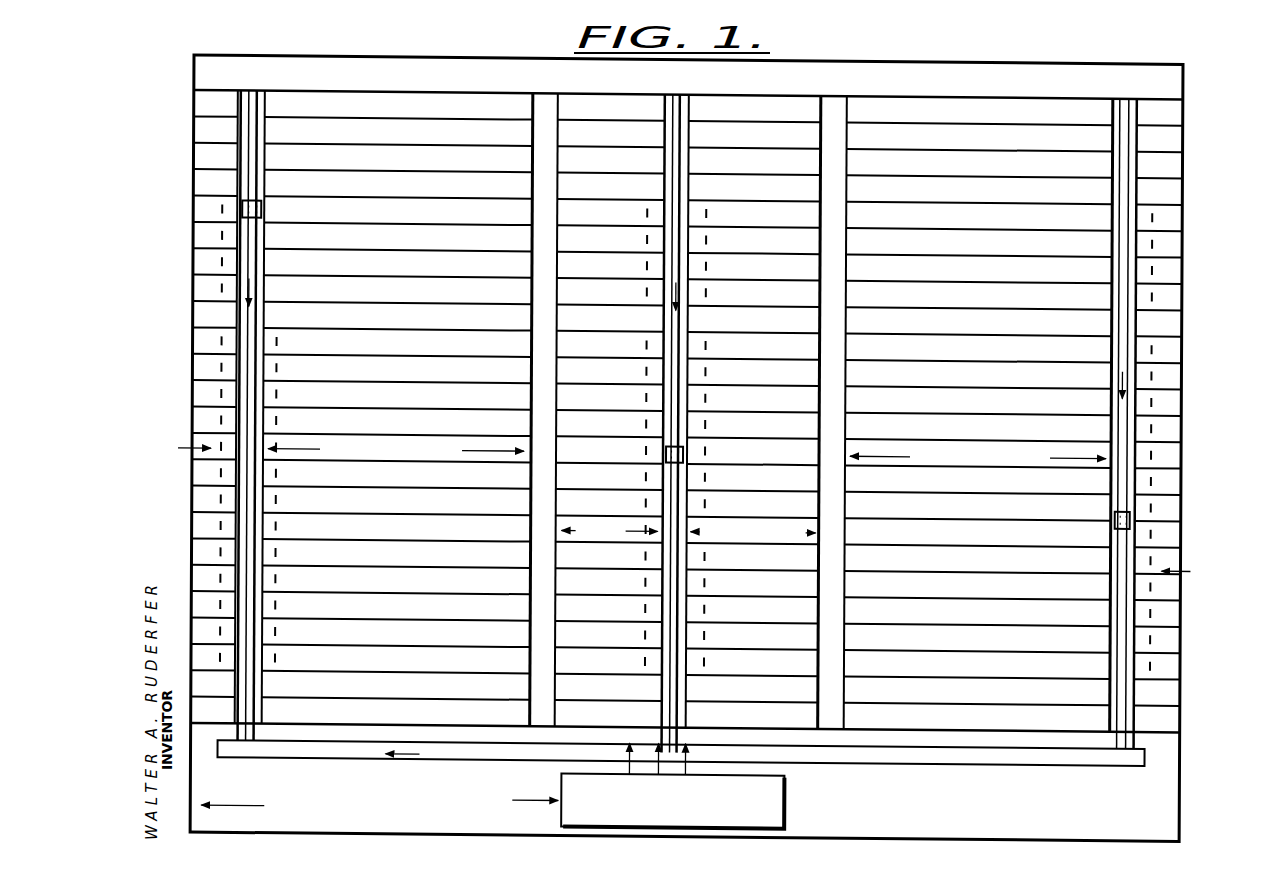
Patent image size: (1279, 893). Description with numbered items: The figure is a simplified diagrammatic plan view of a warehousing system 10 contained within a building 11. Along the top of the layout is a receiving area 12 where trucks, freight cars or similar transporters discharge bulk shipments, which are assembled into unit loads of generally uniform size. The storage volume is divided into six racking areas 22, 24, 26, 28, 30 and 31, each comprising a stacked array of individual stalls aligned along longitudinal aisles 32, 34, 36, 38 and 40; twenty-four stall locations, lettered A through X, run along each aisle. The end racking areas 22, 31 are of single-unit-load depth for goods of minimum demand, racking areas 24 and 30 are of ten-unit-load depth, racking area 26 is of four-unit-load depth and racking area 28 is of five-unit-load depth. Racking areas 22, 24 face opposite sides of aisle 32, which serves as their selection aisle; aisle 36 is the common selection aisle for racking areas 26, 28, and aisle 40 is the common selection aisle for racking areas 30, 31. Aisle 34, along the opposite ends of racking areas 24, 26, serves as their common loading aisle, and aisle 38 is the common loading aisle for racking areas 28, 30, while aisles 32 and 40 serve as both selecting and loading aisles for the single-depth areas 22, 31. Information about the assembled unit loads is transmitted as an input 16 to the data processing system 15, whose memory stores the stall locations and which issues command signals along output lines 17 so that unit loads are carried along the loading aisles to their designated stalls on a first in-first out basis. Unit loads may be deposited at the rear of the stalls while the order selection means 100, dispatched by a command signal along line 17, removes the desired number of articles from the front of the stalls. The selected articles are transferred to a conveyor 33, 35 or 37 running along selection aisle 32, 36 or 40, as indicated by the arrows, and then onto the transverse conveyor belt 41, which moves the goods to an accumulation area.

The warehousing system 10 is at (160, 294).
The building 11 is at (1186, 794).
The receiving area 12 is at (1157, 86).
The data processing system 15 is at (790, 797).
The input 16 is at (536, 797).
The output lines 17 is at (483, 732).
The racking area 22 is at (214, 406).
The racking area 24 is at (397, 409).
The racking area 26 is at (610, 410).
The racking area 28 is at (753, 412).
The racking area 30 is at (978, 415).
The racking area 31 is at (1158, 417).
The aisle 32 is at (258, 296).
The conveyor 33 is at (258, 264).
The aisle 34 is at (540, 260).
The conveyor 35 is at (683, 269).
The aisle 36 is at (686, 293).
The conveyor 37 is at (1121, 374).
The aisle 38 is at (840, 274).
The aisle 40 is at (1118, 347).
The transverse conveyor belt 41 is at (410, 758).
The order selection means 100 is at (264, 208).